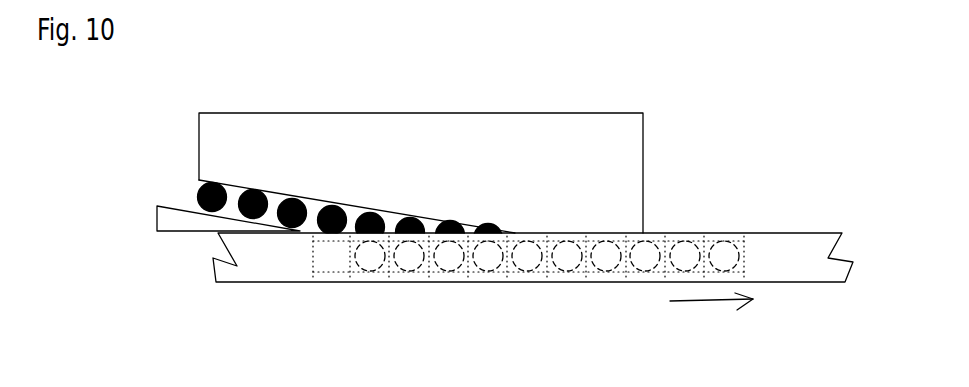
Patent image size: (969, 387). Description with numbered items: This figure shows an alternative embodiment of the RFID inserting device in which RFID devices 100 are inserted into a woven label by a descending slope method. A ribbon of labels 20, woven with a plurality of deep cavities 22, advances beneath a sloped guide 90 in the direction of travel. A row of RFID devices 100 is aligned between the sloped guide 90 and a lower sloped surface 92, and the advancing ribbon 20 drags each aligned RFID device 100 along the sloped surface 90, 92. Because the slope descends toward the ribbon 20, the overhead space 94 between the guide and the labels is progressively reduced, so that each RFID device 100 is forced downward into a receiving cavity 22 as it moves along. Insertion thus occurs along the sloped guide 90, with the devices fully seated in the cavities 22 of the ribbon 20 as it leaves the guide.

The ribbon of labels 20 is at (807, 275).
The cavities 22 is at (333, 272).
The sloped guide 90 is at (477, 152).
The sloped surface 92 is at (180, 227).
The overhead space 94 is at (402, 218).
The RFID device 100 is at (198, 188).